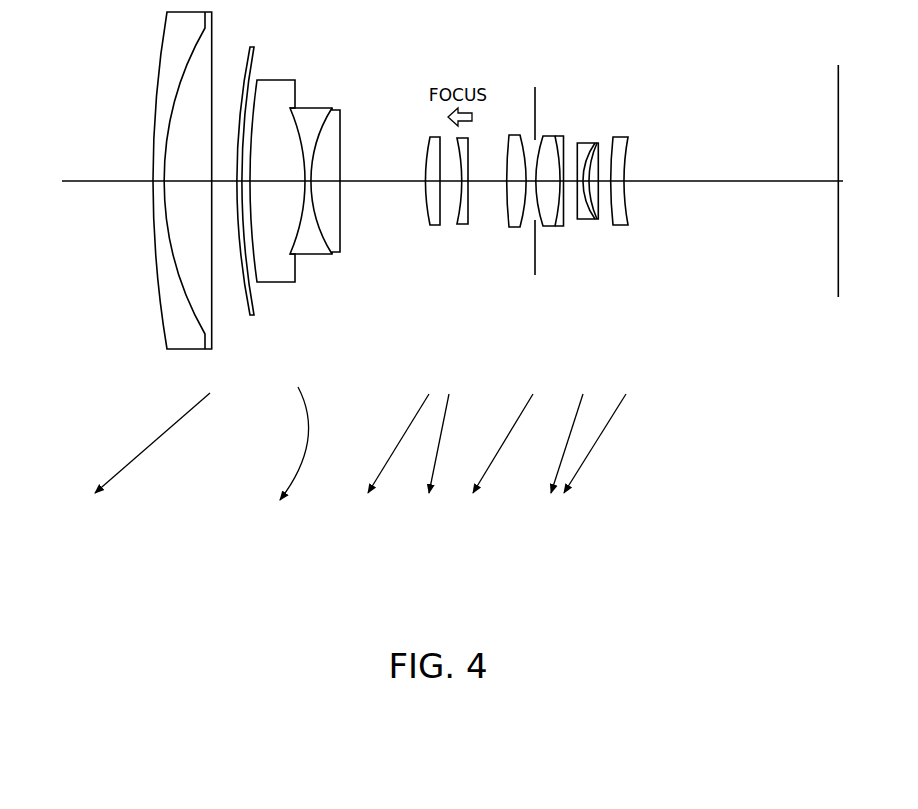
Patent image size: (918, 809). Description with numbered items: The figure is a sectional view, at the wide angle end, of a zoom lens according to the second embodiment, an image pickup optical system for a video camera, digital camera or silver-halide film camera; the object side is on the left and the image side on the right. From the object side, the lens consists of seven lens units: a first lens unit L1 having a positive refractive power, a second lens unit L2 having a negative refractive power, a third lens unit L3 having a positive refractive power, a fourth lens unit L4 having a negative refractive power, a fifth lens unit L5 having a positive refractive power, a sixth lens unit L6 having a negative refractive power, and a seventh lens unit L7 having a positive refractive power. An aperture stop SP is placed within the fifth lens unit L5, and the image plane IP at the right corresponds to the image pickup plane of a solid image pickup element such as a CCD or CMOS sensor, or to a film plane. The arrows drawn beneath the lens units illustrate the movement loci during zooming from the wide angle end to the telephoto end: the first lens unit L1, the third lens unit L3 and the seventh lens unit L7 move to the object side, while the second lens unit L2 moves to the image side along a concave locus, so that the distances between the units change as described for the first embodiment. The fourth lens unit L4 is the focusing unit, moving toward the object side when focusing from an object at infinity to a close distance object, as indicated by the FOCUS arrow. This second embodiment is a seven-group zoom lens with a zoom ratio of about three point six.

The first lens unit L1 is at (167, 358).
The second lens unit L2 is at (257, 324).
The third lens unit L3 is at (440, 325).
The fourth lens unit L4 is at (447, 325).
The fifth lens unit L5 is at (503, 325).
The sixth lens unit L6 is at (573, 325).
The seventh lens unit L7 is at (608, 325).
The aperture stop SP is at (532, 108).
The image plane IP is at (834, 105).